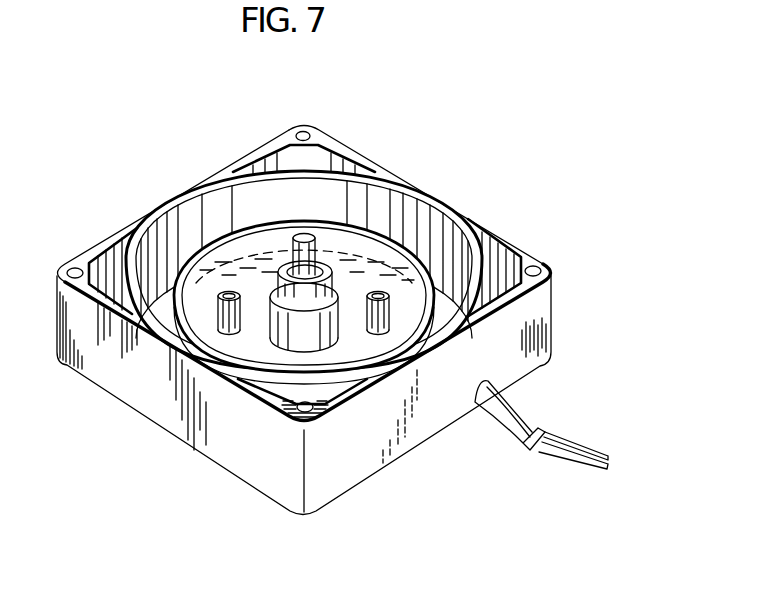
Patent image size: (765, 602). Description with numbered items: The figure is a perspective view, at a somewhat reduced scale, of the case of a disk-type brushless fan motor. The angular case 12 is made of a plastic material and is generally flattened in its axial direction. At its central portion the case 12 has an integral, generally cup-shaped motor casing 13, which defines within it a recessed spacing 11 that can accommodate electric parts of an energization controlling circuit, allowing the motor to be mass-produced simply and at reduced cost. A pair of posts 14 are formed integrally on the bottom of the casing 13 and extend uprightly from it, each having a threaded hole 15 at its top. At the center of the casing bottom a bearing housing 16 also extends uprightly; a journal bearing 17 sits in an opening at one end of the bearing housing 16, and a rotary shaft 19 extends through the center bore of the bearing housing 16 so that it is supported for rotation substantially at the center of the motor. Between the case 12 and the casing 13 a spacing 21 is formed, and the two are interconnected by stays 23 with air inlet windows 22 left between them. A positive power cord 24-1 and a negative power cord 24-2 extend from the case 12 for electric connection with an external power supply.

The recessed spacing 11 is at (263, 350).
The angular case 12 is at (523, 316).
The motor casing 13 is at (272, 222).
The posts 14 is at (237, 345).
The threaded hole 15 is at (222, 330).
The bearing housing 16 is at (337, 322).
The journal bearing 17 is at (305, 352).
The rotary shaft 19 is at (313, 233).
The spacing 21 is at (380, 200).
The air inlet windows 22 is at (447, 298).
The stays 23 is at (492, 260).
The positive power cord 24-1 is at (604, 455).
The negative power cord 24-2 is at (602, 469).